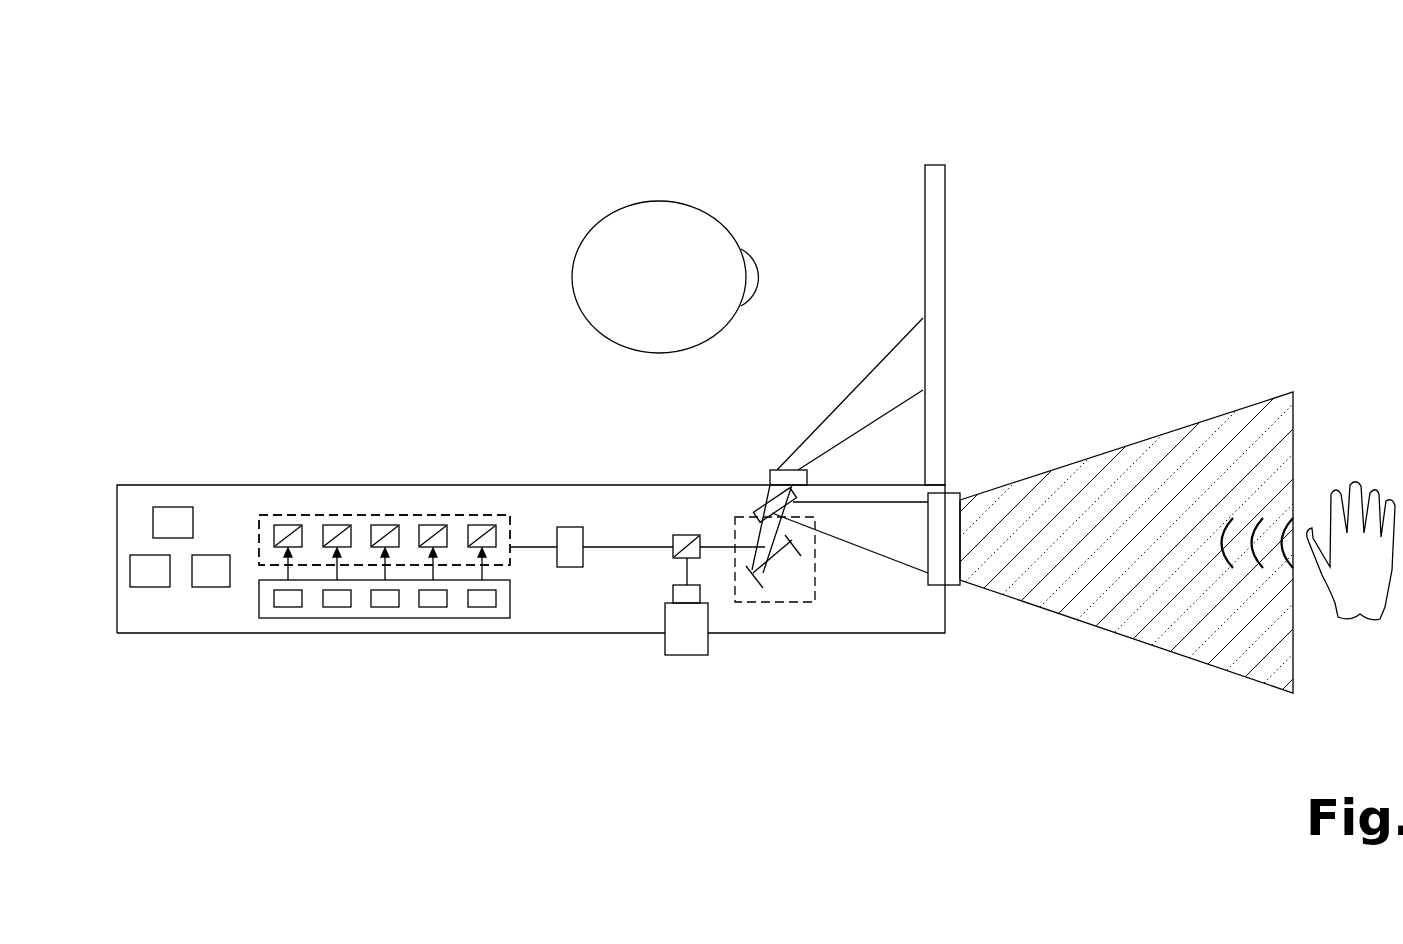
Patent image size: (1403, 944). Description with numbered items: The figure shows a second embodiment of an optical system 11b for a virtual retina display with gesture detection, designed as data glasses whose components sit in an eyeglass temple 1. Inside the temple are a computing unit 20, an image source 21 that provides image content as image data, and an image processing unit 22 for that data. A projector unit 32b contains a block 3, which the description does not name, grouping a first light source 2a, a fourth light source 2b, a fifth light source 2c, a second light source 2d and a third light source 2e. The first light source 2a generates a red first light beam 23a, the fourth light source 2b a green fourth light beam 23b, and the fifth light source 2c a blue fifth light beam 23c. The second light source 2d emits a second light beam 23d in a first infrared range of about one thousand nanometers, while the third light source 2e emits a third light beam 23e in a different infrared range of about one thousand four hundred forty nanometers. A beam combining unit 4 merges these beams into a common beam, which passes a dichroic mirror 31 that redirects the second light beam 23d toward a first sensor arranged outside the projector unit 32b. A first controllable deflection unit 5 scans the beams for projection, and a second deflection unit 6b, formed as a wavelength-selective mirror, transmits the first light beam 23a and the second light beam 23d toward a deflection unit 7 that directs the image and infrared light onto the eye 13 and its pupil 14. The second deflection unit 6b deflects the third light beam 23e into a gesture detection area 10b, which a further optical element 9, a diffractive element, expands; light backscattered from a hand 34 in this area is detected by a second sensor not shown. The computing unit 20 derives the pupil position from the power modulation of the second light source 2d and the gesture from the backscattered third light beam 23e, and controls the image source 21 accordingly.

The optical system 11b is at (320, 152).
The eyeglass temple 1 is at (225, 485).
The computing unit 20 is at (177, 507).
The image source 21 is at (150, 587).
The image processing unit 22 is at (211, 587).
The light source array 3 is at (262, 515).
The projector unit 32b is at (520, 503).
The first light beam 23a is at (292, 572).
The fourth light beam 23b is at (341, 572).
The fifth light beam 23c is at (389, 572).
The second light beam 23d is at (437, 572).
The third light beam 23e is at (486, 572).
The first light source 2a is at (288, 607).
The fourth light source 2b is at (337, 607).
The fifth light source 2c is at (385, 607).
The second light source 2d is at (433, 607).
The third light source 2e is at (482, 607).
The beam combining unit 4 is at (571, 567).
The dichroic mirror 31 is at (682, 535).
The second deflection unit 6b is at (762, 512).
The first controllable deflection unit 5 is at (783, 602).
The deflection unit 7 is at (947, 237).
The further optical element 9 is at (953, 587).
The gesture detection area 10b is at (1102, 470).
The hand 34 is at (1353, 482).
The eye 13 is at (662, 202).
The pupil 14 is at (758, 277).